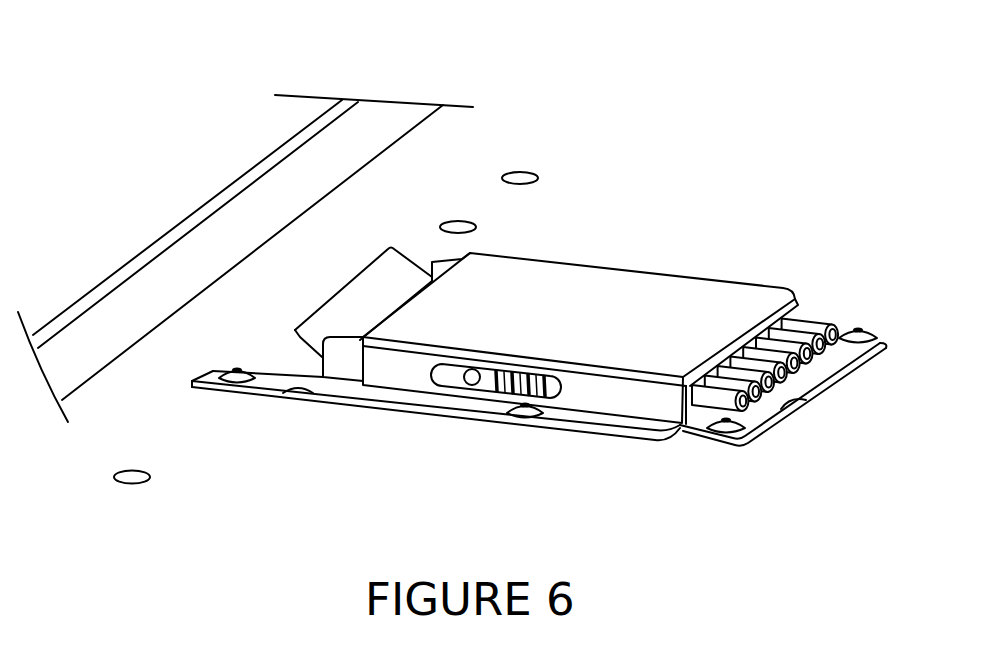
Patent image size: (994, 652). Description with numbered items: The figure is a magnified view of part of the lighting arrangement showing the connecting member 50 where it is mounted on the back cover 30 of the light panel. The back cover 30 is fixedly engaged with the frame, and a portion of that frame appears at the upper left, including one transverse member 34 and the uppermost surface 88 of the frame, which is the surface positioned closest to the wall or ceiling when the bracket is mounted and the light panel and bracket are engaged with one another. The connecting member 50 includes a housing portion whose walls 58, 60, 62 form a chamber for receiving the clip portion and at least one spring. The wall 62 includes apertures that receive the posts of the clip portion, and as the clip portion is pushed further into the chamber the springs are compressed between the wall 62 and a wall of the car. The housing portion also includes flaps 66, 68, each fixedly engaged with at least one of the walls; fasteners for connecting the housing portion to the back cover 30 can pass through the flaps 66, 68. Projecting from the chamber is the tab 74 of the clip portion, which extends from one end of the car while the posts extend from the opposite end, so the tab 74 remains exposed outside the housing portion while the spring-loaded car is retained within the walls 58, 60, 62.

The back cover 30 is at (448, 174).
The transverse member 34 is at (163, 262).
The uppermost surface 88 is at (228, 195).
The connecting member 50 is at (657, 212).
The wall 58 is at (566, 314).
The wall 60 is at (398, 369).
The wall 62 is at (786, 290).
The flap 66 is at (287, 389).
The flap 68 is at (782, 406).
The tab 74 is at (367, 280).